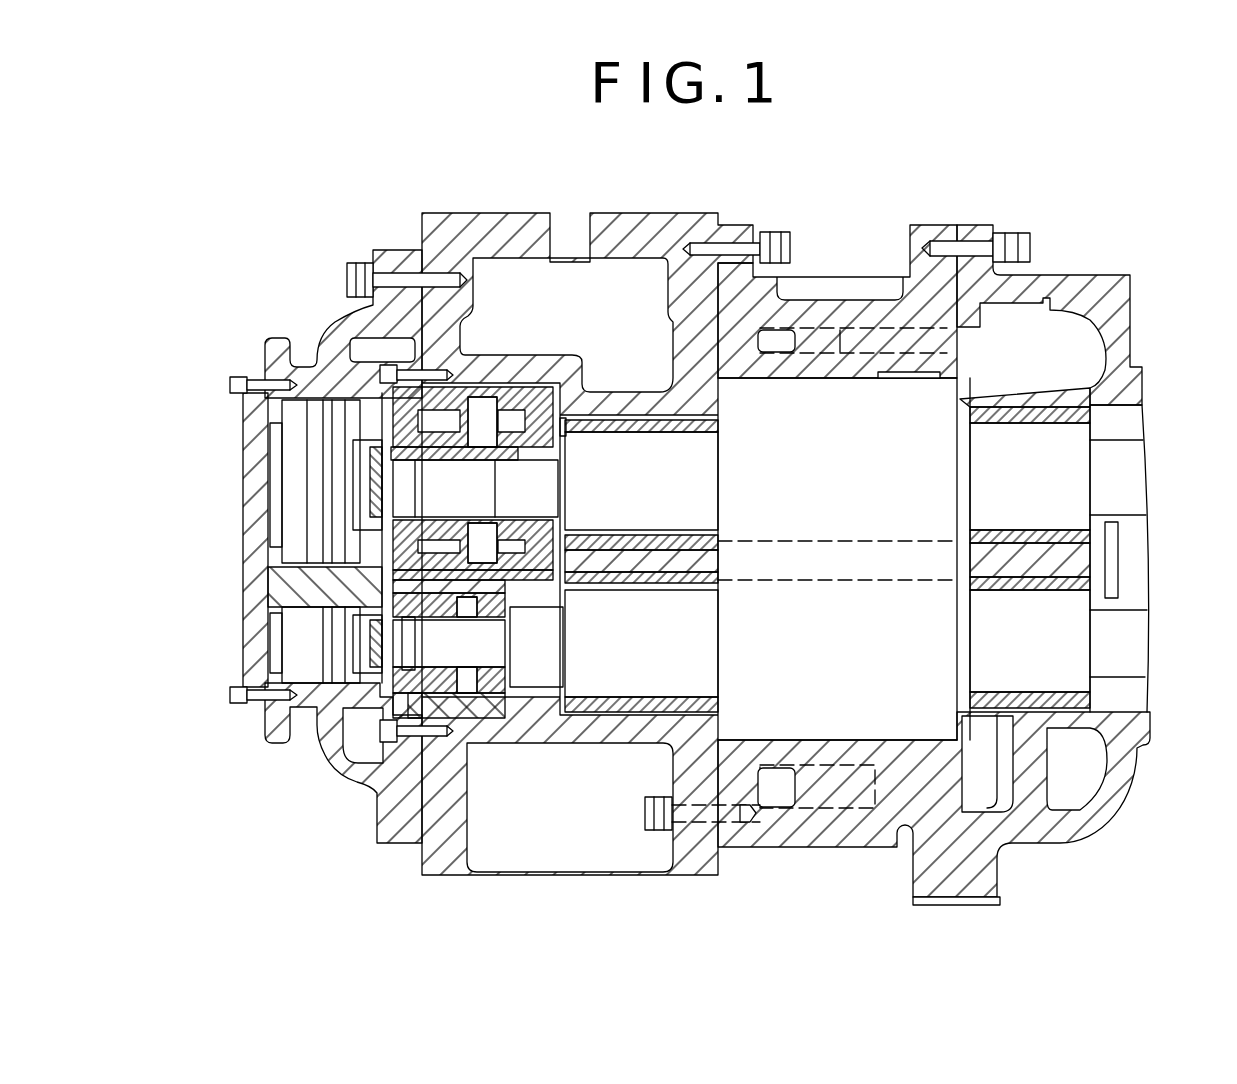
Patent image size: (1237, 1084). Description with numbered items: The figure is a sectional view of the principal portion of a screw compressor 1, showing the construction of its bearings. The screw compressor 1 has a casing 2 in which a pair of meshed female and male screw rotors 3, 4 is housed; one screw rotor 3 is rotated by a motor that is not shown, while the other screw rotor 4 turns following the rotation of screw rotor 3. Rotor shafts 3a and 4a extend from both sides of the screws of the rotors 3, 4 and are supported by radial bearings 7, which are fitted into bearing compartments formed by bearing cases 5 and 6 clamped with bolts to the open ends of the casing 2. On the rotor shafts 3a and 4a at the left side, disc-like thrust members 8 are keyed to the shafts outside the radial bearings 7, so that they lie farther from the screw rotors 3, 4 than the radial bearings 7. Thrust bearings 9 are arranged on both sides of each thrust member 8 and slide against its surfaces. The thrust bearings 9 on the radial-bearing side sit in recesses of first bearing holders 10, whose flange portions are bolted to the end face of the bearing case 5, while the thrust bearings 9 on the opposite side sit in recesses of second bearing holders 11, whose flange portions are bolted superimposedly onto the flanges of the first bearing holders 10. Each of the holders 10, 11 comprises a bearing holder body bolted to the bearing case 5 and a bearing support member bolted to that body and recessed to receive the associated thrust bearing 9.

The screw compressor 1 is at (268, 270).
The casing 2 is at (850, 275).
The screw rotor 3 is at (834, 484).
The screw rotor 4 is at (834, 646).
The rotor shaft 3a is at (597, 440).
The rotor shaft 4a is at (598, 692).
The bearing case 5 is at (421, 232).
The bearing case 6 is at (1130, 310).
The radial bearing 7 is at (663, 413).
The thrust member 8 is at (480, 380).
The thrust bearing 9 is at (470, 387).
The first bearing holder 10 is at (413, 357).
The second bearing holder 11 is at (390, 397).